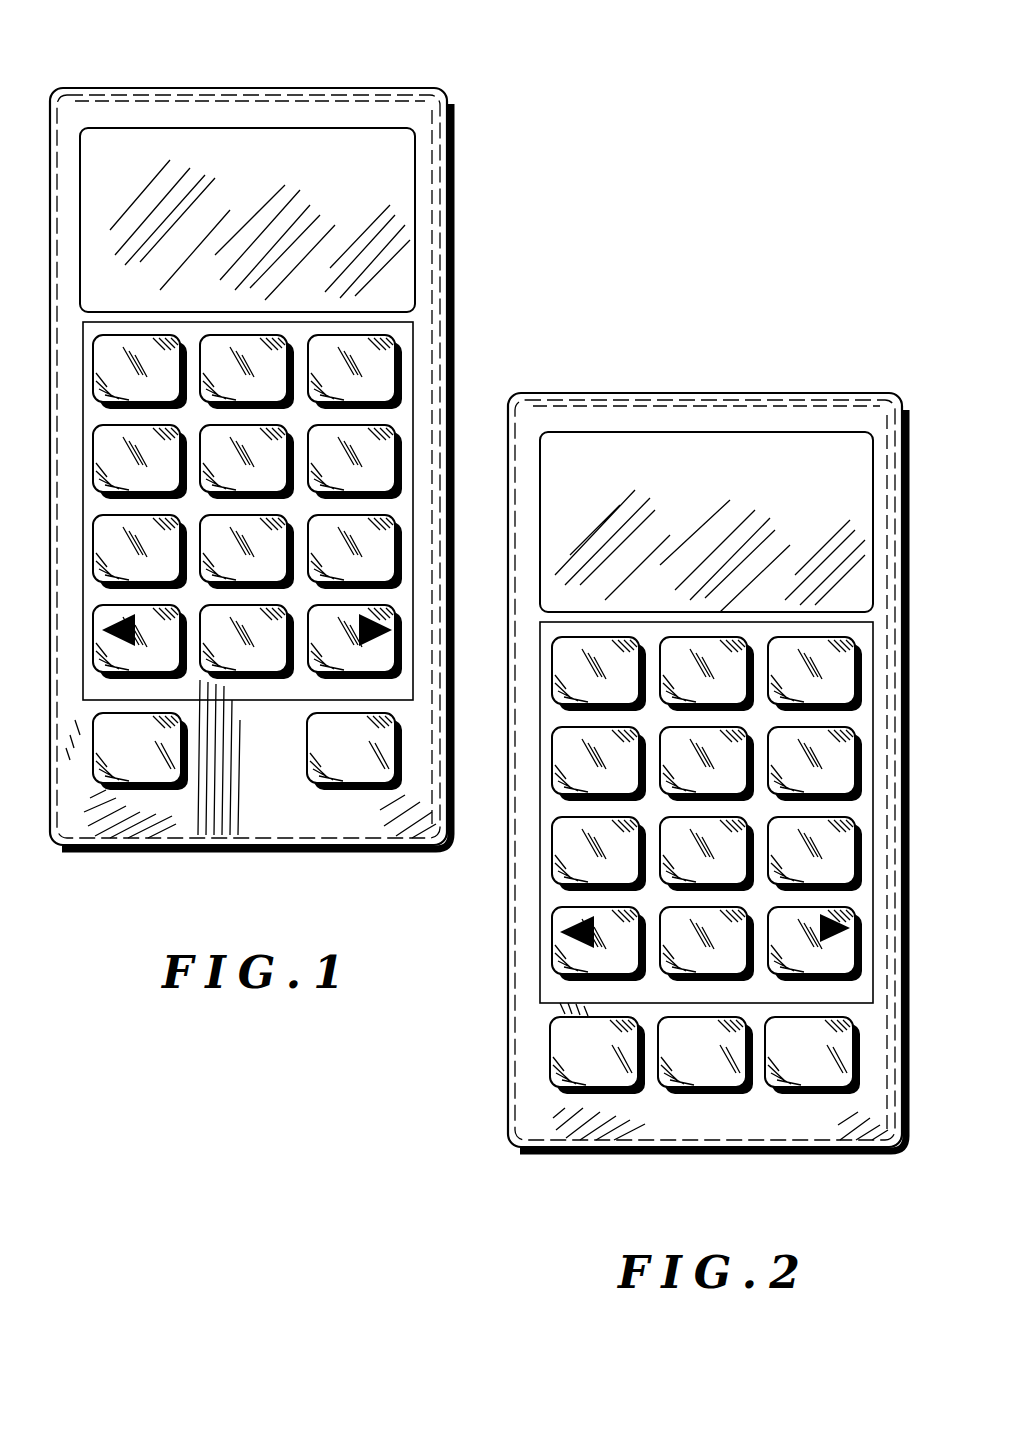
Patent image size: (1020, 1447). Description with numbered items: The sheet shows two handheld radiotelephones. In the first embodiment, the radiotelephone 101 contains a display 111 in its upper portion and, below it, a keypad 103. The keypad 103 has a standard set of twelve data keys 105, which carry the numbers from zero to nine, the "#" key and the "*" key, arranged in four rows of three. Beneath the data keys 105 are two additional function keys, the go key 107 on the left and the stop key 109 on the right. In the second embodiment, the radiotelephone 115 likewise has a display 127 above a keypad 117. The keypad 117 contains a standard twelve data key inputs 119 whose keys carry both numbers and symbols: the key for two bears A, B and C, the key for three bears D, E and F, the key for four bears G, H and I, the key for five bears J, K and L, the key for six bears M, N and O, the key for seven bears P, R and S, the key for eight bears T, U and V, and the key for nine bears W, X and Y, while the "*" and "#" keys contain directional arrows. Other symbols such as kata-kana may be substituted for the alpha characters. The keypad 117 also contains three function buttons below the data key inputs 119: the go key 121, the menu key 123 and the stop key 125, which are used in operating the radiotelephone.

In FIG. 1, the radiotelephone 101 is at (253, 112).
In FIG. 1, the keypad 103 is at (259, 813).
In FIG. 1, the data keys 105 is at (370, 445).
In FIG. 1, the go key 107 is at (118, 773).
In FIG. 1, the stop key 109 is at (393, 775).
In FIG. 1, the display 111 is at (382, 155).
In FIG. 2, the radiotelephone 115 is at (555, 418).
In FIG. 2, the keypad 117 is at (678, 1125).
In FIG. 2, the data key inputs 119 is at (573, 778).
In FIG. 2, the go key 121 is at (566, 1055).
In FIG. 2, the menu key 123 is at (732, 1075).
In FIG. 2, the stop key 125 is at (835, 1075).
In FIG. 2, the display 127 is at (760, 452).